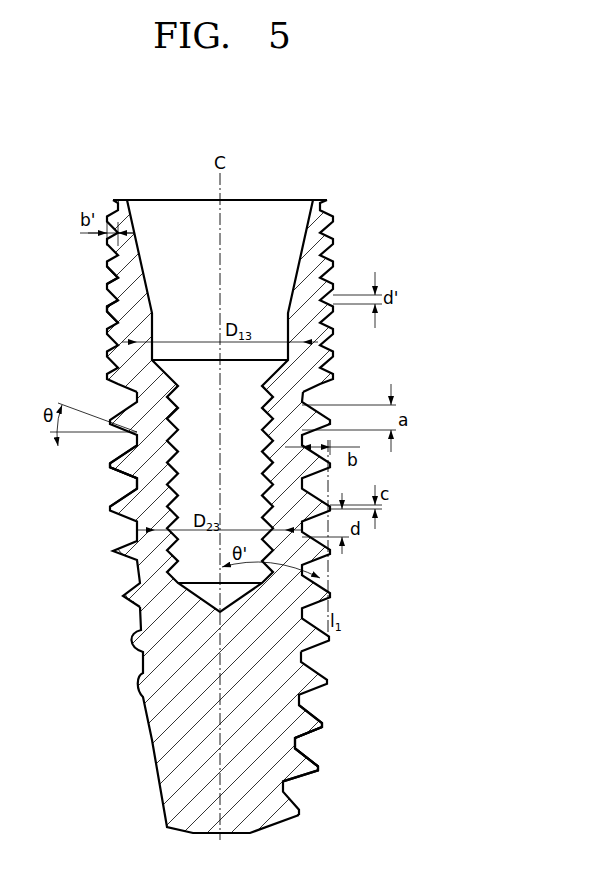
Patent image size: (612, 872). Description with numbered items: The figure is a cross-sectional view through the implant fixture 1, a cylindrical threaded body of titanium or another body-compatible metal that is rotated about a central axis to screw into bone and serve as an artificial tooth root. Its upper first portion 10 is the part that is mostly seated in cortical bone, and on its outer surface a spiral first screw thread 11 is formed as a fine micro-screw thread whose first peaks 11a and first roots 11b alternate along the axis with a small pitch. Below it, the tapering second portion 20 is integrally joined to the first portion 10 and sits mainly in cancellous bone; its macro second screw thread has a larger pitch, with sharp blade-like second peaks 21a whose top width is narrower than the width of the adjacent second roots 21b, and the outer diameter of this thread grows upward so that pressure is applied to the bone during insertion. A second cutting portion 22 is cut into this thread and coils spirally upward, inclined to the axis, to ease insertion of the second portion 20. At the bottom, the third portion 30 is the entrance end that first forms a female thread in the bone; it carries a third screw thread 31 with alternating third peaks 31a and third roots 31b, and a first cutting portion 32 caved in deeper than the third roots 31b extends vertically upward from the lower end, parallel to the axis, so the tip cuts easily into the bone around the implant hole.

The implant fixture 1 is at (413, 173).
The first portion 10 is at (363, 253).
The first screw thread 11 is at (108, 332).
The first peaks 11a is at (108, 308).
The first roots 11b is at (118, 275).
The second portion 20 is at (405, 500).
The second peaks 21a is at (110, 463).
The second roots 21b is at (137, 487).
The second cutting portion 22 is at (120, 598).
The third portion 30 is at (350, 738).
The third screw thread 31 is at (313, 733).
The third peaks 31a is at (317, 768).
The third roots 31b is at (297, 750).
The first cutting portion 32 is at (152, 768).